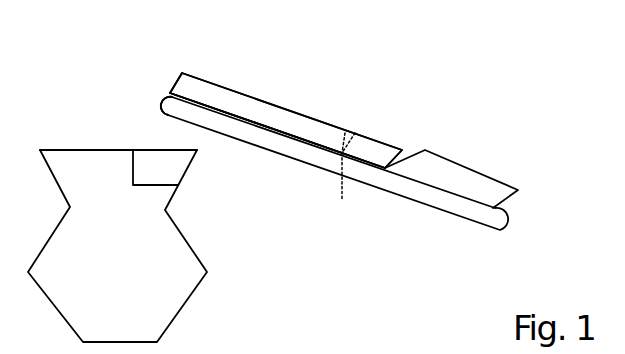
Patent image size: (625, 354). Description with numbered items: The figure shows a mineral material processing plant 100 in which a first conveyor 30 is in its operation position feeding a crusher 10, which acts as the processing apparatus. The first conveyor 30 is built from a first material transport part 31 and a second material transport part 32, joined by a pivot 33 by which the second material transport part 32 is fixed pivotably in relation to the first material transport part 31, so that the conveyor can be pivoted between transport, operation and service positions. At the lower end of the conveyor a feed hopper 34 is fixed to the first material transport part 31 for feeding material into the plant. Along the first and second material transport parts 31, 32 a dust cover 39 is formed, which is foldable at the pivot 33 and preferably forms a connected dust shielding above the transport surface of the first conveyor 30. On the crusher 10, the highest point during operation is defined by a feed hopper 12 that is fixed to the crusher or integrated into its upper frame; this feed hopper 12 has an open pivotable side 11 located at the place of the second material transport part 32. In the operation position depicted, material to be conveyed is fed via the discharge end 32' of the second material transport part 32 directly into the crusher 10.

The mineral material processing plant 100 is at (327, 54).
The crusher 10 is at (159, 246).
The open pivotable side 11 is at (198, 173).
The feed hopper 12 is at (116, 126).
The first conveyor 30 is at (348, 103).
The first material transport part 31 is at (334, 184).
The second material transport part 32 is at (277, 118).
The discharge end 32' is at (125, 105).
The pivot 33 is at (332, 193).
The feed hopper 34 is at (451, 150).
The dust cover 39 is at (272, 117).